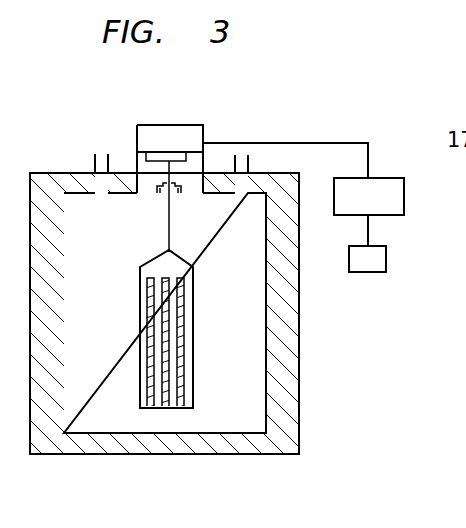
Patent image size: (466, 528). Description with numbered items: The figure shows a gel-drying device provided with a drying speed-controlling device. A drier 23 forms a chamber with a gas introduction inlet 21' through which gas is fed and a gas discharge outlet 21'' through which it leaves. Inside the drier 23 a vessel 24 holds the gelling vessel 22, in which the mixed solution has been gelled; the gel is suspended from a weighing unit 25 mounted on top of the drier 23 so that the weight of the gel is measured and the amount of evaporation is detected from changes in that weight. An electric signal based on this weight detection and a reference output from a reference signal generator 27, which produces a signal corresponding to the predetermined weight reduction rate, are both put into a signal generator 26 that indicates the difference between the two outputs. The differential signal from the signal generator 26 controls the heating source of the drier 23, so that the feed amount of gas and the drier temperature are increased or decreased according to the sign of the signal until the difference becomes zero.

The gas introduction inlet 21' is at (242, 193).
The gas discharge outlet 21'' is at (106, 193).
The gelling vessel 22 is at (164, 277).
The drier 23 is at (285, 355).
The vessel 24 is at (193, 269).
The drive unit 25 is at (180, 135).
The signal generator 26 is at (393, 177).
The reference signal generator 27 is at (376, 272).